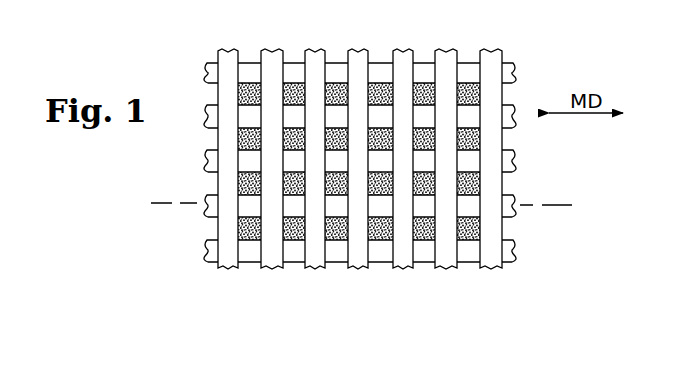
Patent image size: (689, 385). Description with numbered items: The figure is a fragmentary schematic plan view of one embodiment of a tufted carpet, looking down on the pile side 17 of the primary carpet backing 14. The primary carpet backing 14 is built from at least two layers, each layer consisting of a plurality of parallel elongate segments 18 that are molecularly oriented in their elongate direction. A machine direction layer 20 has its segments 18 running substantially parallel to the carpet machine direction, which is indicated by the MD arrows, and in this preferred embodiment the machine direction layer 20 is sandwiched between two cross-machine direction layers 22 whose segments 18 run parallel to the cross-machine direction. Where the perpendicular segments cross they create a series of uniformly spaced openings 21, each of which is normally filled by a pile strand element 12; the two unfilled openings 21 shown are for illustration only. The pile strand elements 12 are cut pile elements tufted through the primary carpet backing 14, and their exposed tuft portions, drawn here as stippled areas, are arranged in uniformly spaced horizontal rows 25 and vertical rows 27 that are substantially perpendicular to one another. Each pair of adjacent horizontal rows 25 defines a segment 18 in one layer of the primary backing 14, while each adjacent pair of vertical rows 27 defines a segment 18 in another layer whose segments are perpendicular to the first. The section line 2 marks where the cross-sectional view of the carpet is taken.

The pile strand elements 12 is at (237, 93).
The primary carpet backing 14 is at (206, 268).
The pile side 17 is at (228, 72).
The parallel elongate segments 18 is at (315, 255).
The machine direction layer 20 is at (517, 251).
The openings 21 is at (467, 189).
The cross-machine direction layers 22 is at (488, 252).
The horizontal rows 25 is at (216, 138).
The vertical rows 27 is at (296, 55).
The section line 2- 2 is at (151, 204).